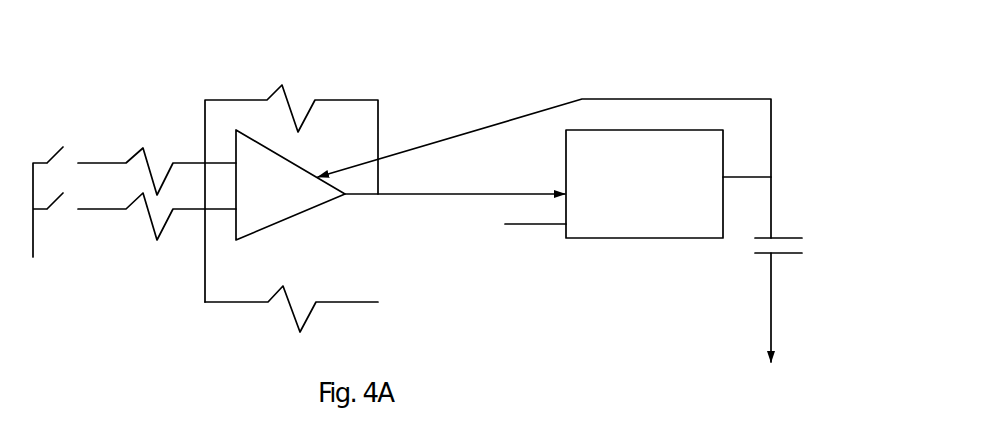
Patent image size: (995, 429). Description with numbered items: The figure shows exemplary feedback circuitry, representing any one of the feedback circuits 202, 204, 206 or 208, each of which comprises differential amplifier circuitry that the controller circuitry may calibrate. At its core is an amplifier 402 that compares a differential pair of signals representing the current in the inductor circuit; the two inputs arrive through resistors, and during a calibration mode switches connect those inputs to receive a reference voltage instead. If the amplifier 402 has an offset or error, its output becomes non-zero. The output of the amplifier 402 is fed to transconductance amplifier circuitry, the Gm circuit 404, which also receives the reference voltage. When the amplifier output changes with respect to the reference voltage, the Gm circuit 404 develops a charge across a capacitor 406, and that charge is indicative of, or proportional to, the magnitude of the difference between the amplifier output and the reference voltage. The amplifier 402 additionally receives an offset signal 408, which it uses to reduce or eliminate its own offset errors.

The feedback circuit 202 is at (432, 185).
The feedback circuit 204 is at (432, 185).
The feedback circuit 206 is at (432, 185).
The feedback circuit 208 is at (432, 185).
The amplifier 402 is at (290, 185).
The transconductance amplifier circuitry (Gm circuit) 404 is at (644, 184).
The capacitor 406 is at (803, 299).
The offset signal 408 is at (544, 157).